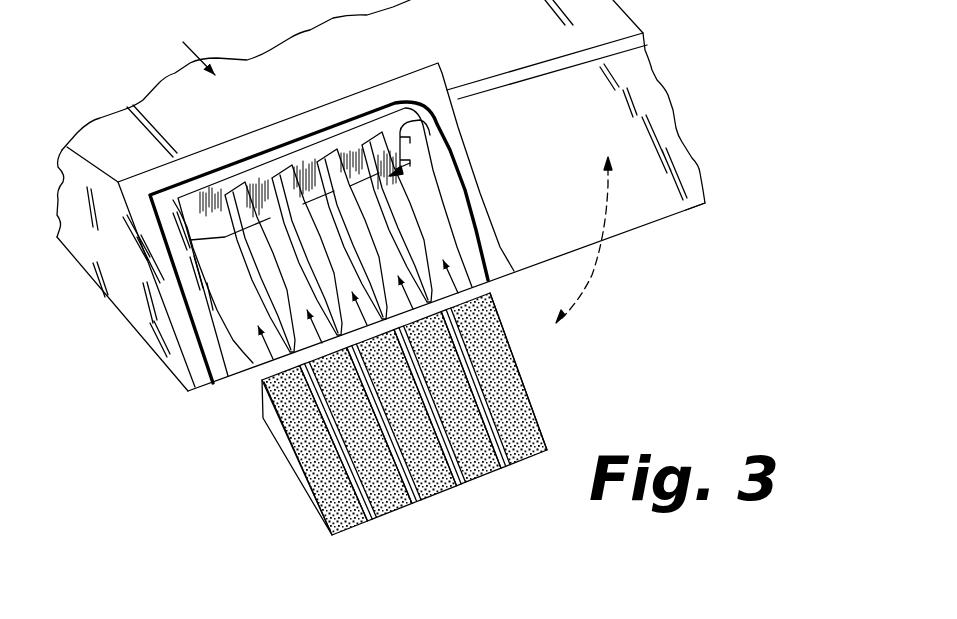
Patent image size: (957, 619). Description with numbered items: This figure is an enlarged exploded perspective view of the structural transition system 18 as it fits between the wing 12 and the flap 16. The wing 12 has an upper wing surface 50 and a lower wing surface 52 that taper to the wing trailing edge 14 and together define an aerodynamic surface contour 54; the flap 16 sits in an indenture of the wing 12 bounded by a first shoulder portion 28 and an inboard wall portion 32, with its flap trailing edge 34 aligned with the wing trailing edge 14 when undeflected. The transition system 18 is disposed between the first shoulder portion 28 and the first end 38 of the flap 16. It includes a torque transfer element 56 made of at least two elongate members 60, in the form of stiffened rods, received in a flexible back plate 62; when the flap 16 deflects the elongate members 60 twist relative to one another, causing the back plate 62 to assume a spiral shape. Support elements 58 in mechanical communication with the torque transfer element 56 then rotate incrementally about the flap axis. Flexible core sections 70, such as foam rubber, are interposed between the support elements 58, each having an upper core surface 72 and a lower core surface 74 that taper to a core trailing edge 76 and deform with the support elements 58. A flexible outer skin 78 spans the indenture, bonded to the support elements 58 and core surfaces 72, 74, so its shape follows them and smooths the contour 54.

The wing 12 is at (170, 80).
The wing trailing edge 14 is at (201, 392).
The flap 16 is at (583, 144).
The structural transition system 18 is at (390, 447).
The first shoulder portion 28 is at (253, 300).
The inboard wall portion 32 is at (290, 160).
The flap trailing edge 34 is at (633, 226).
The first end 38 is at (453, 232).
The upper wing surface 50 is at (100, 124).
The lower wing surface 52 is at (120, 322).
The aerodynamic surface contour 54 is at (185, 46).
The torque transfer element 56 is at (401, 171).
The support elements 58 is at (277, 203).
The elongate members 60 is at (406, 150).
The flexible back plate 62 is at (383, 137).
The flexible core section 70 is at (402, 398).
The upper core surface 72 is at (374, 519).
The lower core surface 74 is at (319, 516).
The core trailing edge 76 is at (361, 522).
The flexible outer skin 78 is at (438, 68).